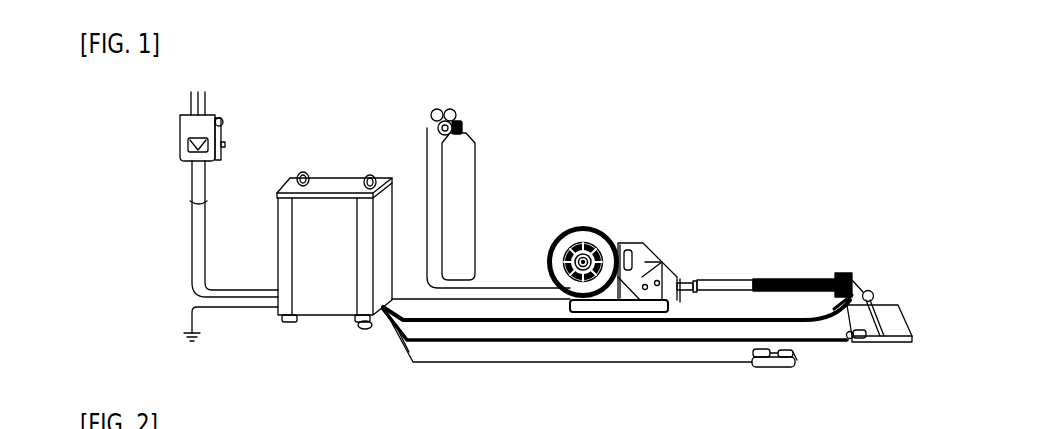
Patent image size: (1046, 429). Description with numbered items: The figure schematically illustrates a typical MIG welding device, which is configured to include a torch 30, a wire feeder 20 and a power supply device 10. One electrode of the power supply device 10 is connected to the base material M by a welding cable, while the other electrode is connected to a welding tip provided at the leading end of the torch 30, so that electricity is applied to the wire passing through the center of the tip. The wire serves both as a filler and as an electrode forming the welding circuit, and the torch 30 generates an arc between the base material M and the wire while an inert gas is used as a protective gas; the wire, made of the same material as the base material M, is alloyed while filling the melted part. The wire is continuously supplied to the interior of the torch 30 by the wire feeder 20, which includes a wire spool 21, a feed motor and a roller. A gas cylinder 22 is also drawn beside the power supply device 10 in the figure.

The power supply device 10 is at (335, 185).
The wire feeder 20 is at (623, 232).
The wire spool 21 is at (575, 235).
The shielding gas cylinder 22 is at (468, 168).
The torch 30 is at (813, 275).
The base material M is at (893, 312).